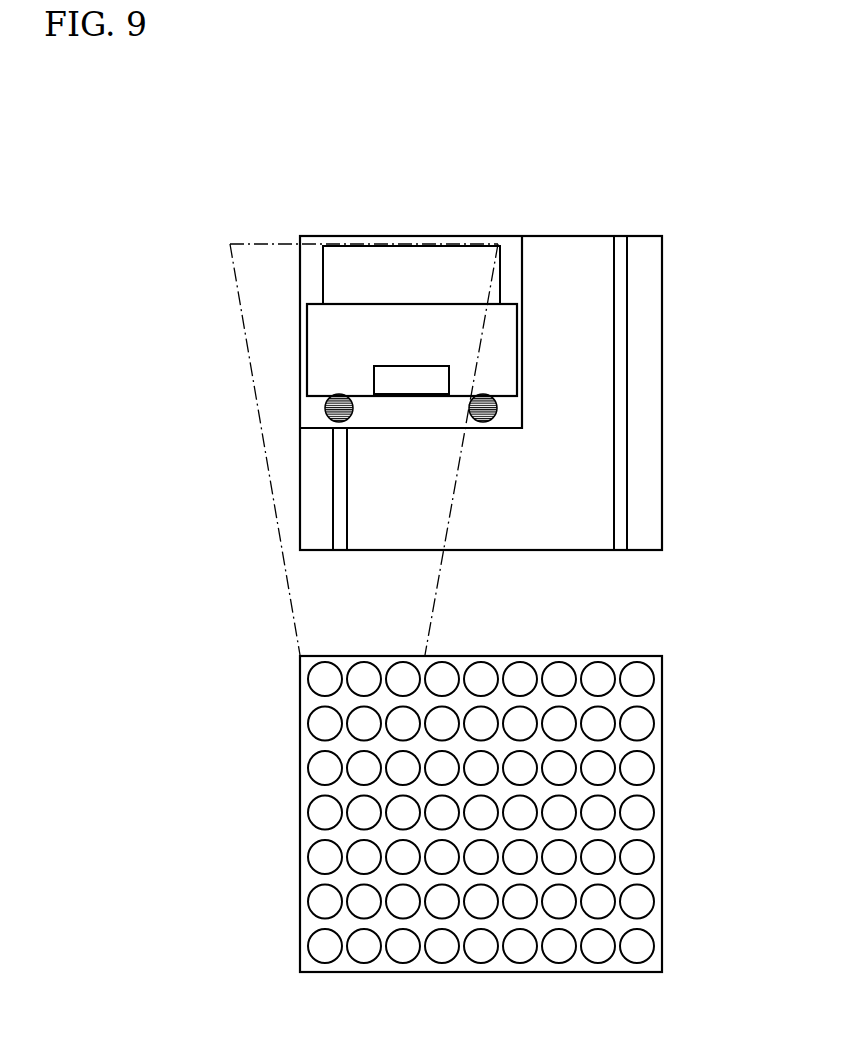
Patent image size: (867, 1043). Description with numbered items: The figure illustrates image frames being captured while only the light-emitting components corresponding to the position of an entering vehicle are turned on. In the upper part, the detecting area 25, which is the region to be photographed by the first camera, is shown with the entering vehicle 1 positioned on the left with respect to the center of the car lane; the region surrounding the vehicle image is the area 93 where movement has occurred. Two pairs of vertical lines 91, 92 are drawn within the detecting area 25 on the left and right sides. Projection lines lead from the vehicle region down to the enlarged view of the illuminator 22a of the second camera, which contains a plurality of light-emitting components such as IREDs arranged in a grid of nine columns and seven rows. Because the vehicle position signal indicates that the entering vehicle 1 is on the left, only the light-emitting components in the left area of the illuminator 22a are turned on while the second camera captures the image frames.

The entering vehicle 1 is at (307, 350).
The detecting area 25 is at (662, 393).
The first vertical display line 91 is at (339, 540).
The second vertical display line 92 is at (621, 540).
The area where movement has occurred 93 is at (522, 255).
The illuminator 22a is at (662, 813).